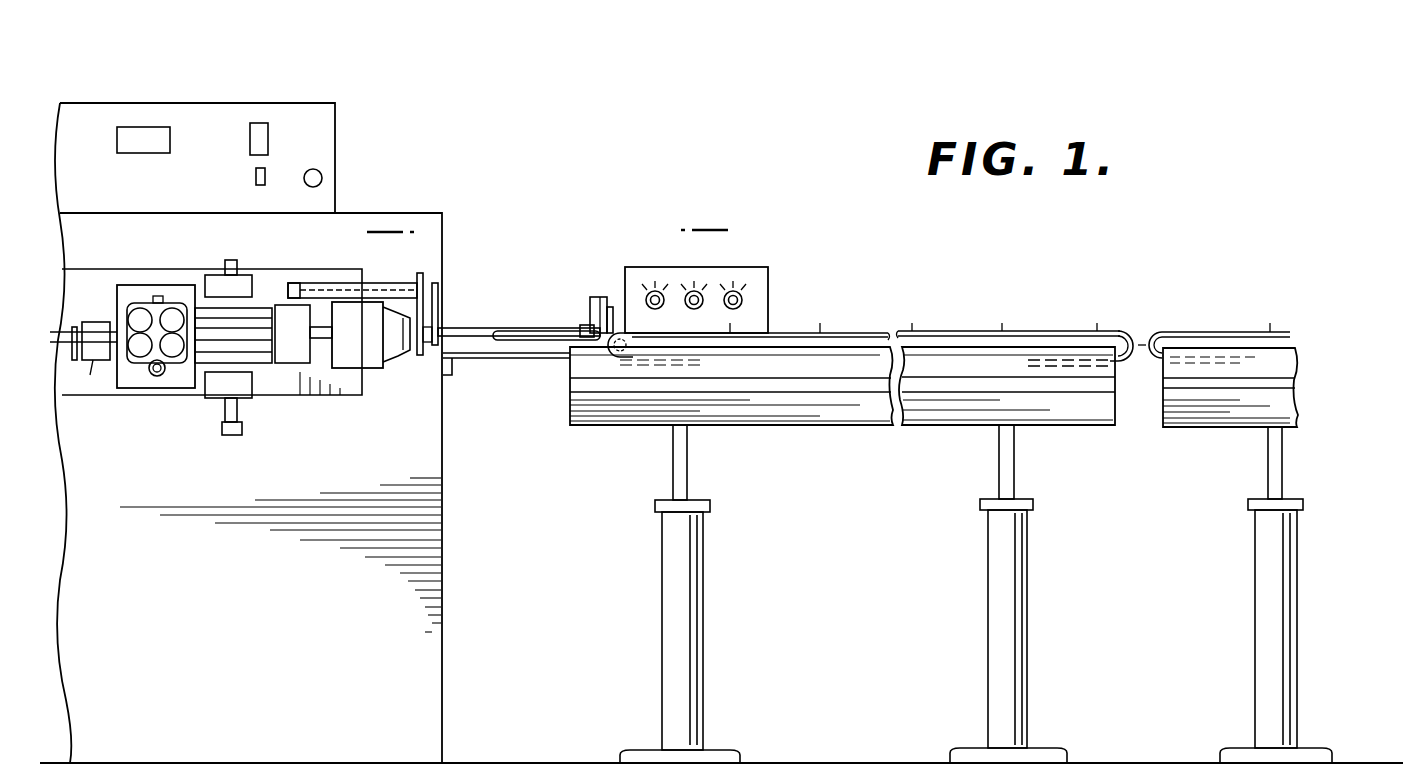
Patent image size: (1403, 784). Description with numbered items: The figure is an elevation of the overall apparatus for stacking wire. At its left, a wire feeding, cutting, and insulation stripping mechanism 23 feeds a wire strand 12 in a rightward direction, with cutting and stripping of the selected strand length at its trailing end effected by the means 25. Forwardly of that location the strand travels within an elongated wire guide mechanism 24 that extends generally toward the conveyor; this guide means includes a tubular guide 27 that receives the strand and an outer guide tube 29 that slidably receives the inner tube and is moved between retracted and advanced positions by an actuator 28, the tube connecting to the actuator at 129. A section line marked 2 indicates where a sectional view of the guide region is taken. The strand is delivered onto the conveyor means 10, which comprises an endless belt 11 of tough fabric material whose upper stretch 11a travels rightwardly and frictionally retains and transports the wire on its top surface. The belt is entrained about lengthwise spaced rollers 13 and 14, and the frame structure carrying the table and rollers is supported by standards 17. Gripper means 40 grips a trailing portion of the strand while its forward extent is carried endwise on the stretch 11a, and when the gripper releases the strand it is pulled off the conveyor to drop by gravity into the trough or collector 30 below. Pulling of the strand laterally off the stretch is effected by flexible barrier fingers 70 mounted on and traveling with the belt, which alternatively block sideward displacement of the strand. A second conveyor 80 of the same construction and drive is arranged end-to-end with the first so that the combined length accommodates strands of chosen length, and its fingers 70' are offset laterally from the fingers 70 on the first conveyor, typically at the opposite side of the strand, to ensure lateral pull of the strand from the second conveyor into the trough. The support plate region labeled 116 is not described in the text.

The section line 2 is at (375, 226).
The conveyor means 10 is at (867, 307).
The endless belt 11 is at (1132, 329).
The belt upper stretch 11a is at (970, 330).
The conveyor support plate 116 is at (1062, 367).
The wire strand 12 is at (585, 347).
The roller 13 is at (613, 347).
The roller 14 is at (1128, 363).
The standards 17 is at (667, 638).
The wire feeding, cutting, and insulation stripping mechanism 23 is at (265, 410).
The elongated wire guide mechanism 24 is at (471, 321).
The cutting and stripping means 25 is at (389, 382).
The tubular guide 27 is at (553, 328).
The actuator 28 is at (383, 288).
The outer guide tube 29 is at (468, 340).
The trough or collector 30 is at (596, 429).
The gripper means 40 is at (600, 291).
The barrier fingers 70 is at (723, 294).
The fingers 70' is at (1223, 340).
The second conveyor 80 is at (1270, 330).
The connection of outer guide tube to actuator 129 is at (440, 303).